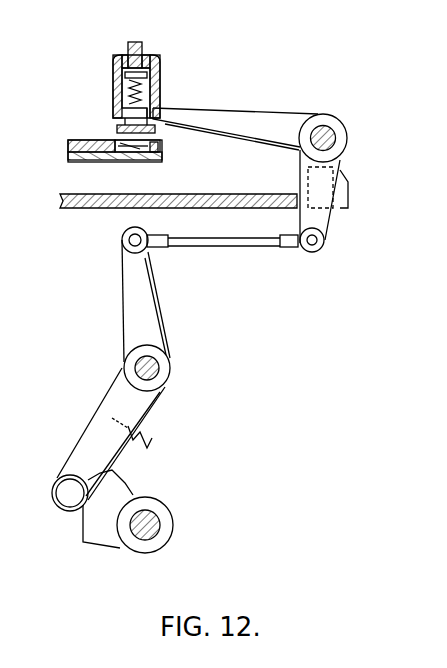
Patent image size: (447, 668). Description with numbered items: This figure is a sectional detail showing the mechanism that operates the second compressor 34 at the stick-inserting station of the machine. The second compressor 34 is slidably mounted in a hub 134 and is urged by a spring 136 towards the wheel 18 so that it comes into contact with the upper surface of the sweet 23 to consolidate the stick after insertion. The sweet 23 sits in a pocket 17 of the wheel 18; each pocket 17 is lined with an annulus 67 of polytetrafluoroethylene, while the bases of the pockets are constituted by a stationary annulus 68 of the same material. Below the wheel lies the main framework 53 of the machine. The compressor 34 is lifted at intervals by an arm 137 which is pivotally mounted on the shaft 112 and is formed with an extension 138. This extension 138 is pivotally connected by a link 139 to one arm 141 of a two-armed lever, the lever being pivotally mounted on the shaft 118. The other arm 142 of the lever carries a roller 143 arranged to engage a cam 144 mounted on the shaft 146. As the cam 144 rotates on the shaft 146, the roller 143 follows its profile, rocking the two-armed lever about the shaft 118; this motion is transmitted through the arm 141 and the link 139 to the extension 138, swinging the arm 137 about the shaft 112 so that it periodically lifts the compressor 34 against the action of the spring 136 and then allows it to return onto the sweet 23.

The hub 134 is at (150, 57).
The spring 136 is at (161, 78).
The second compressor 34 is at (152, 131).
The arm 137 is at (250, 112).
The shaft 112 is at (336, 136).
The extension 138 is at (320, 228).
The main framework 53 is at (245, 203).
The wheel 18 is at (70, 141).
The annulus 67 is at (115, 141).
The stationary annulus 68 is at (80, 160).
The sweet 23 is at (132, 158).
The pocket 17 is at (156, 158).
The link 139 is at (208, 248).
The arm 141 is at (134, 300).
The shaft 118 is at (160, 368).
The arm 142 is at (118, 400).
The roller 143 is at (52, 493).
The cam 144 is at (101, 534).
The shaft 146 is at (155, 523).